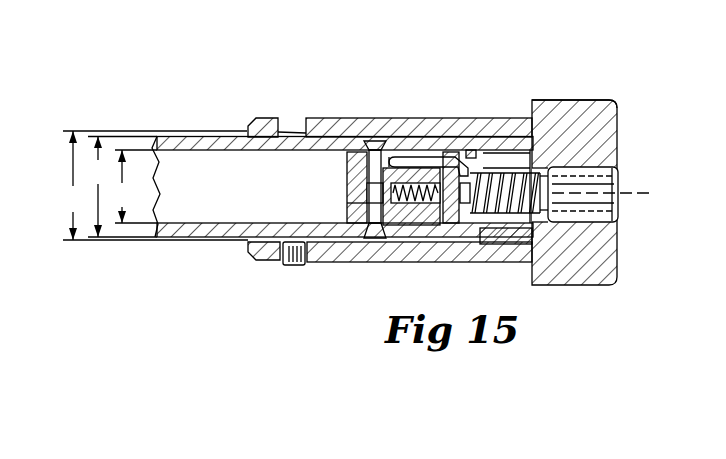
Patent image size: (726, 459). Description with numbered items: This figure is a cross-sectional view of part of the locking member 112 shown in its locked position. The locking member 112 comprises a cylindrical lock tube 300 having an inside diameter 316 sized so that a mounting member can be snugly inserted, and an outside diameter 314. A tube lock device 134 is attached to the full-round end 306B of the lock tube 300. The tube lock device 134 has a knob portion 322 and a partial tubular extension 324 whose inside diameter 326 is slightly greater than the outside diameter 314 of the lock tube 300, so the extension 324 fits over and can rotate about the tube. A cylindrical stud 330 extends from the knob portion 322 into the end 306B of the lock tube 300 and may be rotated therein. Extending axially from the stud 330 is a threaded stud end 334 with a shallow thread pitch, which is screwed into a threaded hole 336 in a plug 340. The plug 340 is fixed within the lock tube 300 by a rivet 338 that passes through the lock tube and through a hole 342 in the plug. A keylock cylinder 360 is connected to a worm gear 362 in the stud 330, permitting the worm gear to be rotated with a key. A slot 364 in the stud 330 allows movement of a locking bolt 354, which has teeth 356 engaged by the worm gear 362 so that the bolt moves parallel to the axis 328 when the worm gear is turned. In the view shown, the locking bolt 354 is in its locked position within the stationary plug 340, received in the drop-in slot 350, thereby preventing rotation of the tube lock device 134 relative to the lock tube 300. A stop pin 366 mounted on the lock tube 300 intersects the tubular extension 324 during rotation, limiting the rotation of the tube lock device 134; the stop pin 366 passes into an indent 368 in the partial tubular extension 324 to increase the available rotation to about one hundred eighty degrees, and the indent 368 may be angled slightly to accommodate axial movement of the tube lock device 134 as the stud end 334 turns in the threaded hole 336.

The locking member 112 is at (148, 124).
The lock tube 300 is at (178, 130).
The partial tubular extension 324 is at (313, 118).
The indent 368 is at (283, 119).
The stop pin 366 is at (291, 266).
The knob portion 322 is at (619, 124).
The tube lock device 134 is at (620, 92).
The keylock cylinder 360 is at (621, 178).
The axis 328 is at (652, 193).
The worm gear 362 is at (507, 168).
The slot 364 is at (471, 140).
The locking bolt 354 is at (470, 156).
The drop-in slot 350 is at (400, 155).
The end of lock tube 306B is at (524, 158).
The rivet 338 is at (382, 183).
The threaded stud end 334 is at (393, 191).
The hole in plug 342 is at (372, 203).
The plug 340 is at (343, 232).
The teeth 356 is at (452, 218).
The threaded hole 336 is at (410, 205).
The cylindrical stud 330 is at (484, 218).
The inside diameter of tubular extension 326 is at (75, 185).
The outside diameter of lock tube 314 is at (101, 187).
The inside diameter of lock tube 316 is at (126, 186).